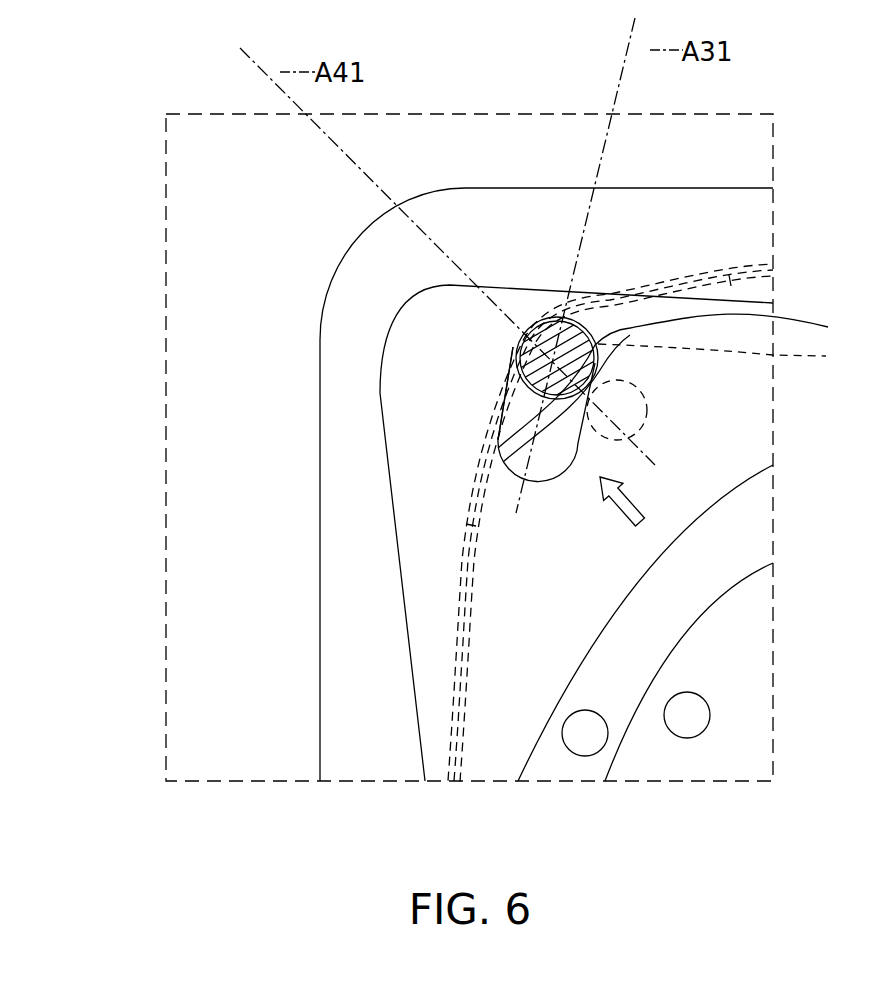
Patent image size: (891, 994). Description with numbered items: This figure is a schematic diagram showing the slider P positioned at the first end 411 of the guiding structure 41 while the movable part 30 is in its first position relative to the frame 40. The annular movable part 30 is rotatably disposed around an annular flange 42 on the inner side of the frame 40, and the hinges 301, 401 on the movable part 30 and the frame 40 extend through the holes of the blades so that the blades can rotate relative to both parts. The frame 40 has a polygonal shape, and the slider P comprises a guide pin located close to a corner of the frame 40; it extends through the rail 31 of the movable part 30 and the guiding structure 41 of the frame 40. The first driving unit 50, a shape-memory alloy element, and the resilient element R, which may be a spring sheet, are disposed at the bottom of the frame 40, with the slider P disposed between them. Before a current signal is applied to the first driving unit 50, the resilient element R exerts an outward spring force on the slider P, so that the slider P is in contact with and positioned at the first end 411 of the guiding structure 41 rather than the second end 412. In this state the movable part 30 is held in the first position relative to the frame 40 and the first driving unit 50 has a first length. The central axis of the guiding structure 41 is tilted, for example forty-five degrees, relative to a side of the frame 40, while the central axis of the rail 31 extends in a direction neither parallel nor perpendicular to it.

The movable part 30 is at (396, 532).
The rail 31 is at (503, 410).
The frame 40 is at (318, 462).
The guiding structure 41 is at (687, 268).
The annular flange 42 is at (693, 603).
The first driving unit 50 is at (560, 318).
The hinge 301 is at (585, 740).
The hinge 401 is at (690, 725).
The first end 411 is at (545, 317).
The second end 412 is at (643, 424).
The slider P is at (673, 386).
The resilient element R is at (723, 355).